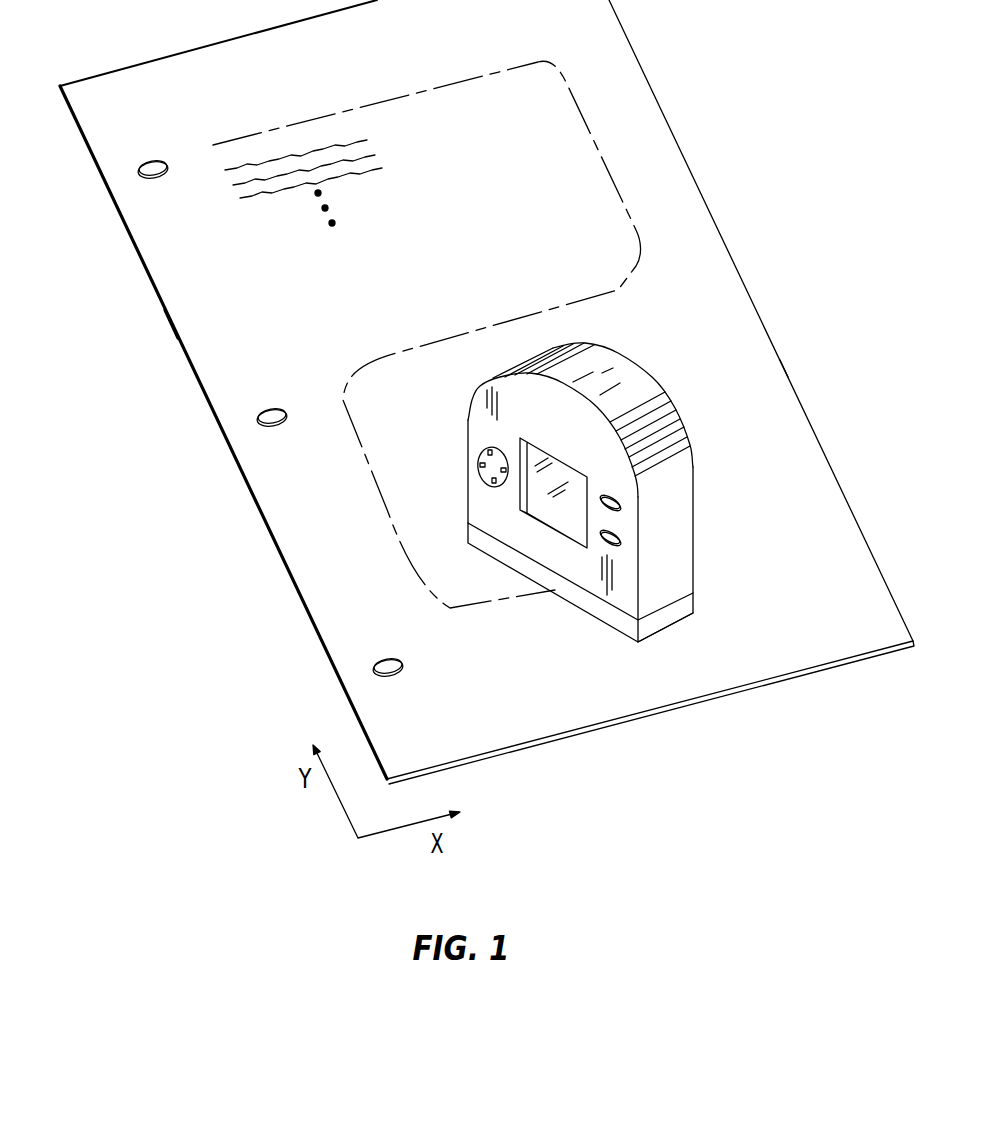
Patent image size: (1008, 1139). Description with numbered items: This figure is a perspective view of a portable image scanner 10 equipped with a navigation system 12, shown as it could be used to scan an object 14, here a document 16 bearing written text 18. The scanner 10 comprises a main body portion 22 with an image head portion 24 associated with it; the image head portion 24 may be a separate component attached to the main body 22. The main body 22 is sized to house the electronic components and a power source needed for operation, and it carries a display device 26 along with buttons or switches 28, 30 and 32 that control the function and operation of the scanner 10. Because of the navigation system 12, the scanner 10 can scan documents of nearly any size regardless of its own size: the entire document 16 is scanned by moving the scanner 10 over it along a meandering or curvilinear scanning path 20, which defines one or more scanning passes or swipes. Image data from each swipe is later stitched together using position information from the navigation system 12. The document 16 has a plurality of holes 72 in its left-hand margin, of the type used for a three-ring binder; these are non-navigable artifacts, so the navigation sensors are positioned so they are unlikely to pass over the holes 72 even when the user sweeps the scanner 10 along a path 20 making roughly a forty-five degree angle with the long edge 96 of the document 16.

The portable image scanner 10 is at (586, 507).
The navigation system 12 is at (671, 640).
The object 14 is at (728, 229).
The document 16 is at (785, 365).
The written text 18 is at (377, 162).
The meandering or curvilinear scanning path 20 is at (388, 512).
The main body portion 22 is at (695, 465).
The image head portion 24 is at (695, 600).
The display device 26 is at (519, 517).
The button or switch 28 is at (478, 463).
The button or switch 30 is at (622, 504).
The button or switch 32 is at (622, 539).
The holes 72 is at (138, 172).
The long edge 96 is at (172, 328).